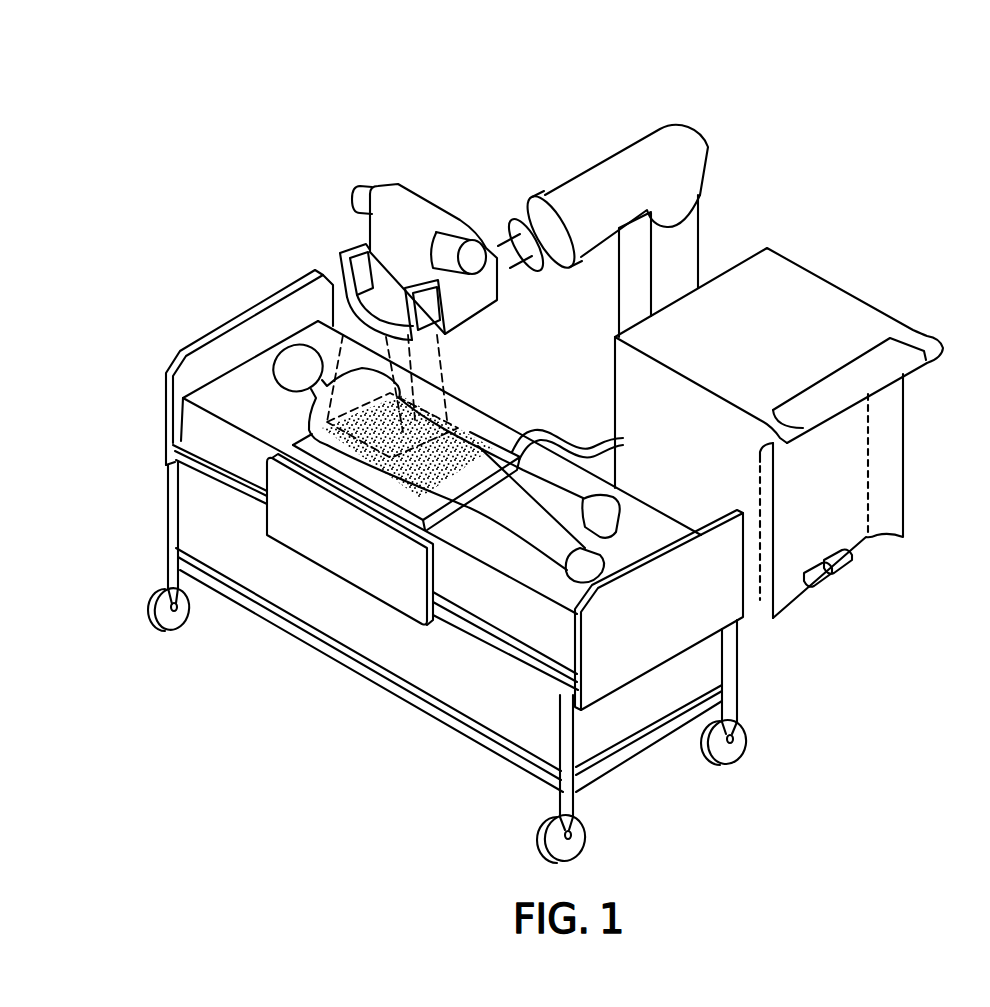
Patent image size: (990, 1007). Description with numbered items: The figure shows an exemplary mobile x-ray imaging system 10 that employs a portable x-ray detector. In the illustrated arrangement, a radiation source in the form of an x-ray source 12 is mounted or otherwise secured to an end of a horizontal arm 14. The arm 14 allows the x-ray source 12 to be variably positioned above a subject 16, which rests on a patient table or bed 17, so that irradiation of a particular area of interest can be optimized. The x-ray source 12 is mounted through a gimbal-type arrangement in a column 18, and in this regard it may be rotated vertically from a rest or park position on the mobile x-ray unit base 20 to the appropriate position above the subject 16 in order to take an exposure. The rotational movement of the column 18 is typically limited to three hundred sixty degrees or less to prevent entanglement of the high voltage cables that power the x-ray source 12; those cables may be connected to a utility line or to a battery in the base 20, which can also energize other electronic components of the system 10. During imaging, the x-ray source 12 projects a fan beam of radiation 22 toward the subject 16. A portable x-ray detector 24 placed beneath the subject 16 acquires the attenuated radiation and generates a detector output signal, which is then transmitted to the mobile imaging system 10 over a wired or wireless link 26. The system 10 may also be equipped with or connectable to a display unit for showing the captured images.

The mobile x-ray imaging system 10 is at (796, 89).
The x-ray source 12 is at (413, 207).
The horizontal arm 14 is at (604, 172).
The subject 16 is at (590, 497).
The patient table or bed 17 is at (497, 610).
The column 18 is at (688, 272).
The mobile x-ray unit base 20 is at (837, 505).
The fan beam of radiation 22 is at (449, 371).
The portable x-ray detector 24 is at (437, 528).
The wired or wireless link 26 is at (562, 440).